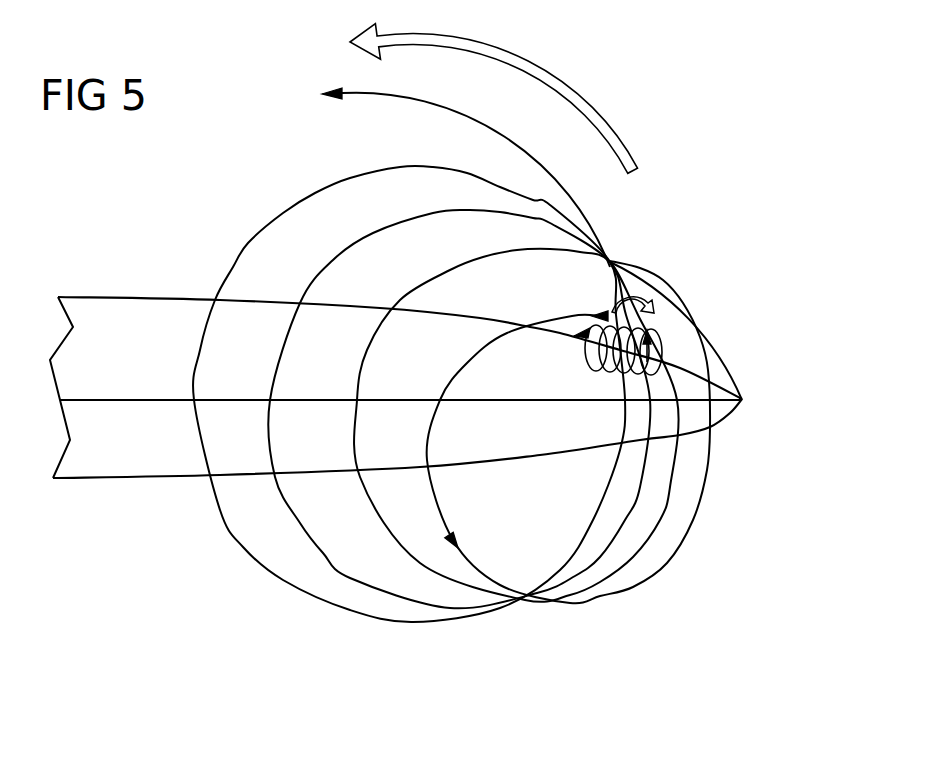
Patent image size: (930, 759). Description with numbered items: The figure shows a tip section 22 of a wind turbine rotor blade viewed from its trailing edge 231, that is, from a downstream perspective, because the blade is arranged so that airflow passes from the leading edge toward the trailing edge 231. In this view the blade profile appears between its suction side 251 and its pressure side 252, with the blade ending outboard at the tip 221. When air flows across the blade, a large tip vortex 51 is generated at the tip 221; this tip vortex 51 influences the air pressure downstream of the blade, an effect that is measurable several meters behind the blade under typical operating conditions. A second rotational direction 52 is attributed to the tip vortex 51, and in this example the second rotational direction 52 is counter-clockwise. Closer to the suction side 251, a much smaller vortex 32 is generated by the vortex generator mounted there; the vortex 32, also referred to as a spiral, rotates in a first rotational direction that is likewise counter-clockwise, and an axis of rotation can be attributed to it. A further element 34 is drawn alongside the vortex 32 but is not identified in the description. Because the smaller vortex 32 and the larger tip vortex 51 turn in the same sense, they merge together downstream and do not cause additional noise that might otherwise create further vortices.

The tip section 22 is at (440, 297).
The tip vortex 51 is at (283, 211).
The second rotational direction 52 is at (522, 63).
The vortex 32 is at (613, 303).
The coil / helical vortex element 34 is at (585, 358).
The tip 221 is at (745, 400).
The trailing edge 231 is at (140, 398).
The suction side 251 is at (137, 297).
The pressure side 252 is at (147, 482).